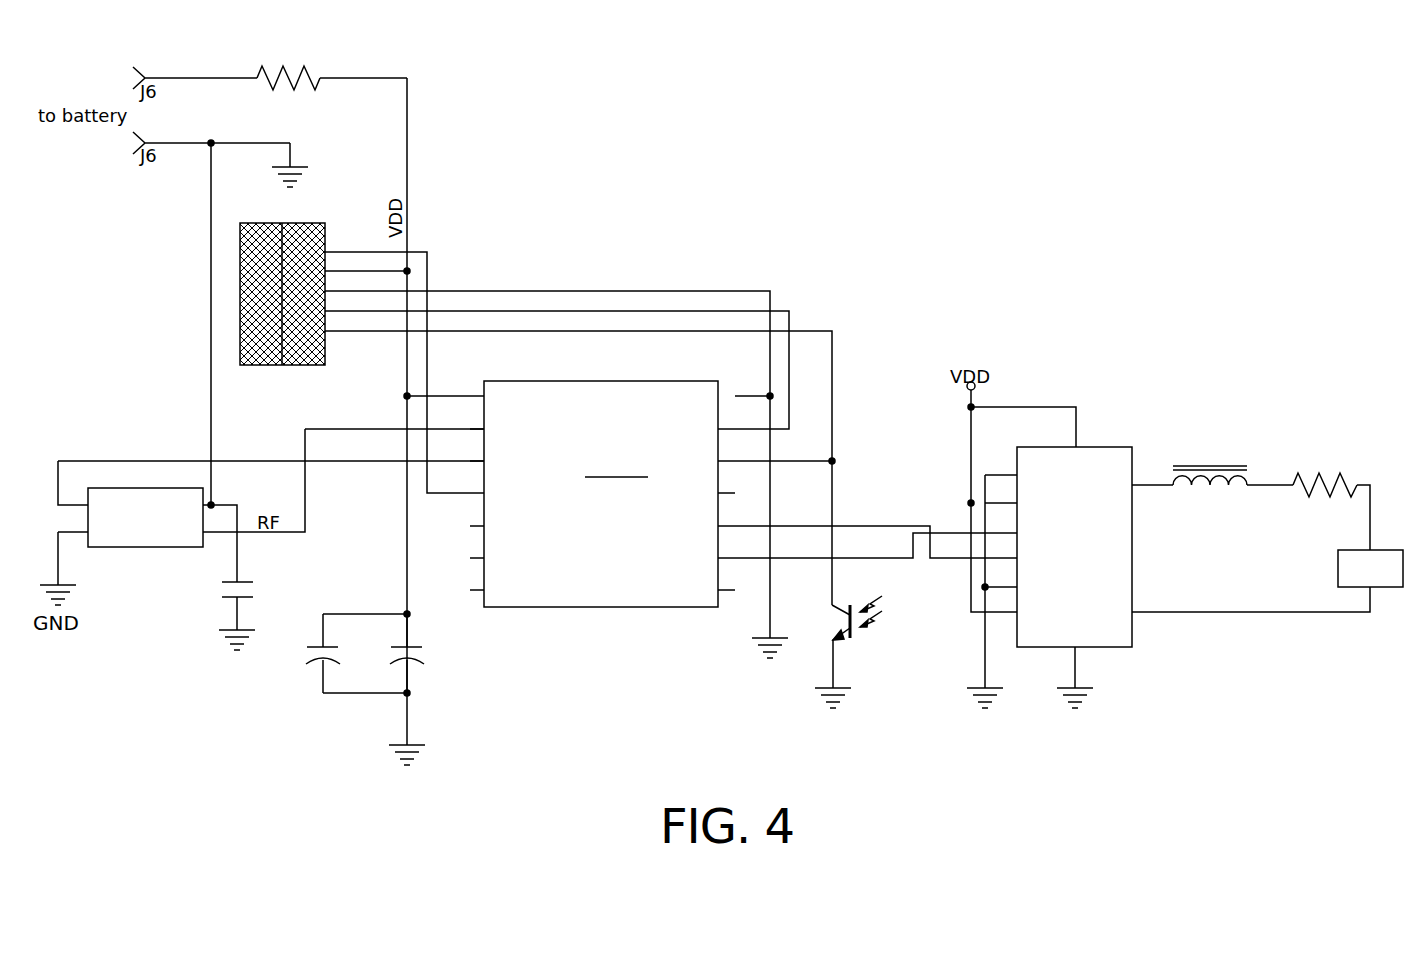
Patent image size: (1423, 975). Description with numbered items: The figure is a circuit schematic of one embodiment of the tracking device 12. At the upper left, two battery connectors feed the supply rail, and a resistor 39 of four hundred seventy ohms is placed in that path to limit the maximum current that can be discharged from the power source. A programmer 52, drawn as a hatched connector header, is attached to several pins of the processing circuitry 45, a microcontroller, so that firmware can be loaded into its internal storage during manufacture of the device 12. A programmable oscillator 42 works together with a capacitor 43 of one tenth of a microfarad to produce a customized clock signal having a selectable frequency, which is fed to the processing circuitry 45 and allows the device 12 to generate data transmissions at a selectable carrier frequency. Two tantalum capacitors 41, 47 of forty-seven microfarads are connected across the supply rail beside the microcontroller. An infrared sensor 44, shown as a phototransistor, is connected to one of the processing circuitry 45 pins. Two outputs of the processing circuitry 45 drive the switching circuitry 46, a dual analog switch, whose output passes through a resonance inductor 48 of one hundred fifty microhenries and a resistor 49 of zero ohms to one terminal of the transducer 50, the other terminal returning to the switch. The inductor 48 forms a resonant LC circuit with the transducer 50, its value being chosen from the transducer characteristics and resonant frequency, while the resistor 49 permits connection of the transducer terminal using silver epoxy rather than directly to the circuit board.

The tracking device 12 is at (955, 240).
The resistor 39 is at (306, 50).
The capacitor C1 41 is at (312, 660).
The programmable oscillator 42 is at (137, 488).
The capacitor 43 is at (245, 578).
The infrared sensor 44 is at (855, 645).
The processing circuitry 45 is at (690, 615).
The switching circuitry 46 is at (1110, 648).
The capacitor C2 47 is at (413, 668).
The resonance inductor 48 is at (1222, 470).
The resistor 49 is at (1327, 440).
The transducer 50 is at (1390, 588).
The programmer 52 is at (325, 227).